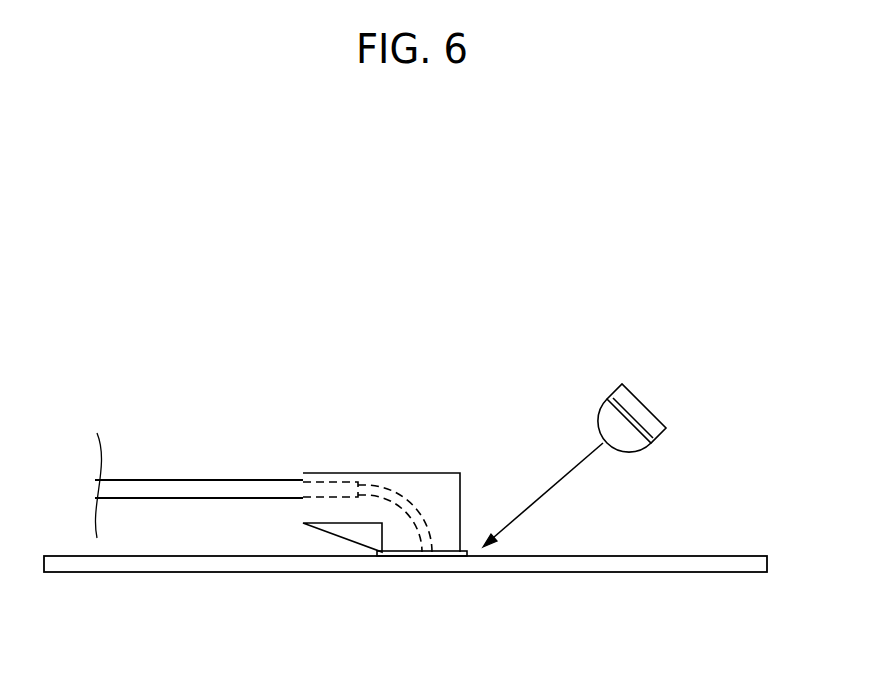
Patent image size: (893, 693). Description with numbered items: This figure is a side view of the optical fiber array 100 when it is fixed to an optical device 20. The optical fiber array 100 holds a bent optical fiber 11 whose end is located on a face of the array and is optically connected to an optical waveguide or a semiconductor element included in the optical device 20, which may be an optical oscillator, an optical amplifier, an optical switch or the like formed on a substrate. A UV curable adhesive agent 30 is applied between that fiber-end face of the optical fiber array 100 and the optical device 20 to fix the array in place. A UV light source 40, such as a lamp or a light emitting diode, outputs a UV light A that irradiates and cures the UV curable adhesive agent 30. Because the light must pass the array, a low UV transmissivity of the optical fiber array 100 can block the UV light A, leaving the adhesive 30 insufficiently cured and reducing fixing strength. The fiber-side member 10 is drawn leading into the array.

The tube 10 is at (248, 490).
The optical fiber array 100 is at (372, 480).
The optical fiber 11 is at (403, 505).
The UV curable adhesive agent 30 is at (375, 552).
The optical device 20 is at (298, 565).
The UV light source 40 is at (637, 412).
The UV light A is at (587, 458).